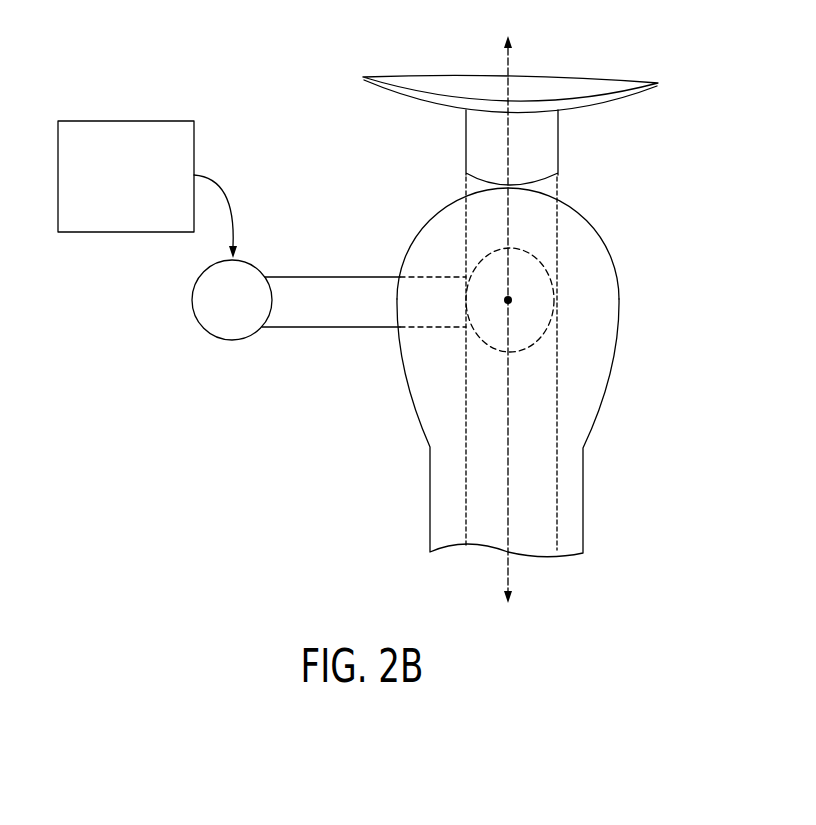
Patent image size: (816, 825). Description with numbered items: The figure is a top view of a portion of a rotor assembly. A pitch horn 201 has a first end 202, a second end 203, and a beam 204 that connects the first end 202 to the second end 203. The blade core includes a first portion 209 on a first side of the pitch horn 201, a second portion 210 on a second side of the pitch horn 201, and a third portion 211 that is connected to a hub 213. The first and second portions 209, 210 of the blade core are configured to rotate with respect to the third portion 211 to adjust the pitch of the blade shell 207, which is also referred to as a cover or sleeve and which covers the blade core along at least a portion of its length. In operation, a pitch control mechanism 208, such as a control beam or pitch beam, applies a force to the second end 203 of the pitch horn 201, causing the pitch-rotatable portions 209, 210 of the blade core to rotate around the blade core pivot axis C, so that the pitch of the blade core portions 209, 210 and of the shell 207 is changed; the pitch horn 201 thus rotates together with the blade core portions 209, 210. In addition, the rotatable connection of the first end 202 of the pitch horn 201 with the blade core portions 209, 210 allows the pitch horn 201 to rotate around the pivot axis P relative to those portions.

The pitch horn 201 is at (344, 243).
The first end 202 is at (550, 311).
The second end 203 is at (232, 330).
The beam 204 is at (342, 320).
The blade shell 207 is at (570, 492).
The pitch control mechanism 208 is at (126, 121).
The first portion 209 is at (532, 232).
The second portion 210 is at (567, 380).
The third portion 211 is at (533, 137).
The hub 213 is at (594, 102).
The pivot axis P is at (508, 300).
The blade core pivot axis C is at (519, 75).